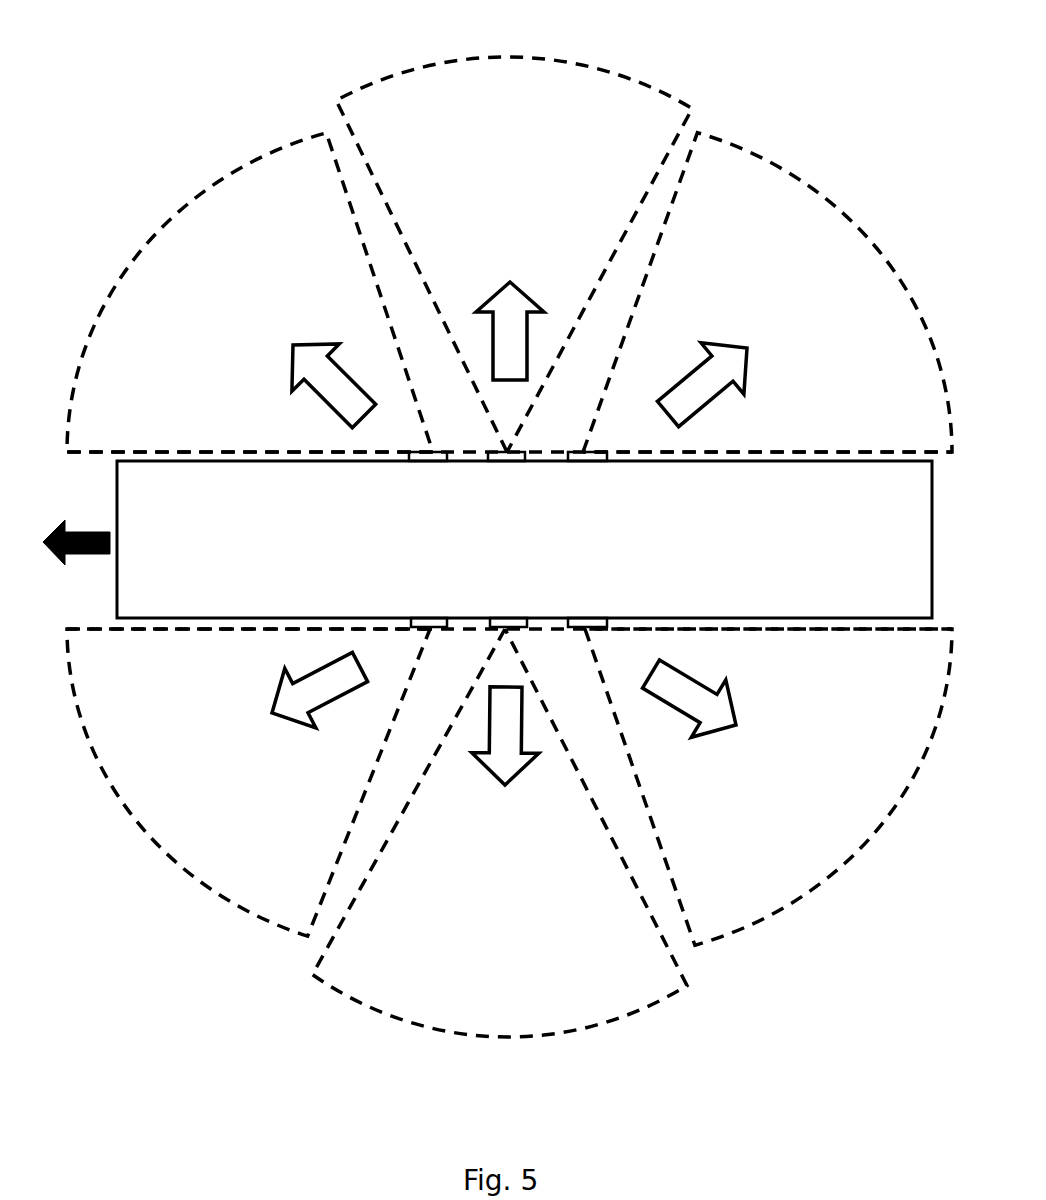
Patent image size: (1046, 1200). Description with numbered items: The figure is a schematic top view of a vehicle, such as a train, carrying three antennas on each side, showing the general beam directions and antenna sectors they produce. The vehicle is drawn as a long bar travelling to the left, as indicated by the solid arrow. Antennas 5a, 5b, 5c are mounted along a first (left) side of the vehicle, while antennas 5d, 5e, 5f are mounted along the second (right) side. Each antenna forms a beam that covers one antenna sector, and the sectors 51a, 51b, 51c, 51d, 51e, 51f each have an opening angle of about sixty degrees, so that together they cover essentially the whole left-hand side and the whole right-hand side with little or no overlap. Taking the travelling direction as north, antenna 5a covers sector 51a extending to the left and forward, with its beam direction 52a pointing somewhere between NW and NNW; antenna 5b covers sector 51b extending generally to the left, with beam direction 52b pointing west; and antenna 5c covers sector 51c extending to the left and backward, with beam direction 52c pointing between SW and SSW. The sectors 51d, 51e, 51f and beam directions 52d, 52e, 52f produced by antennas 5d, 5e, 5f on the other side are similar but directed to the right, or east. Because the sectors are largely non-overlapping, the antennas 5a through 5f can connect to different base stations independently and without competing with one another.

The antenna 5a is at (434, 617).
The antenna 5b is at (511, 617).
The antenna 5c is at (588, 617).
The antenna 5d is at (437, 462).
The antenna 5e is at (508, 462).
The antenna 5f is at (590, 462).
The antenna sector 51a is at (162, 824).
The antenna sector 51b is at (400, 988).
The antenna sector 51c is at (890, 775).
The antenna sector 51d is at (150, 278).
The antenna sector 51e is at (602, 97).
The antenna sector 51f is at (838, 260).
The beam direction 52a is at (300, 727).
The beam direction 52b is at (518, 773).
The beam direction 52c is at (708, 733).
The beam direction 52d is at (288, 365).
The beam direction 52e is at (527, 290).
The beam direction 52f is at (745, 373).